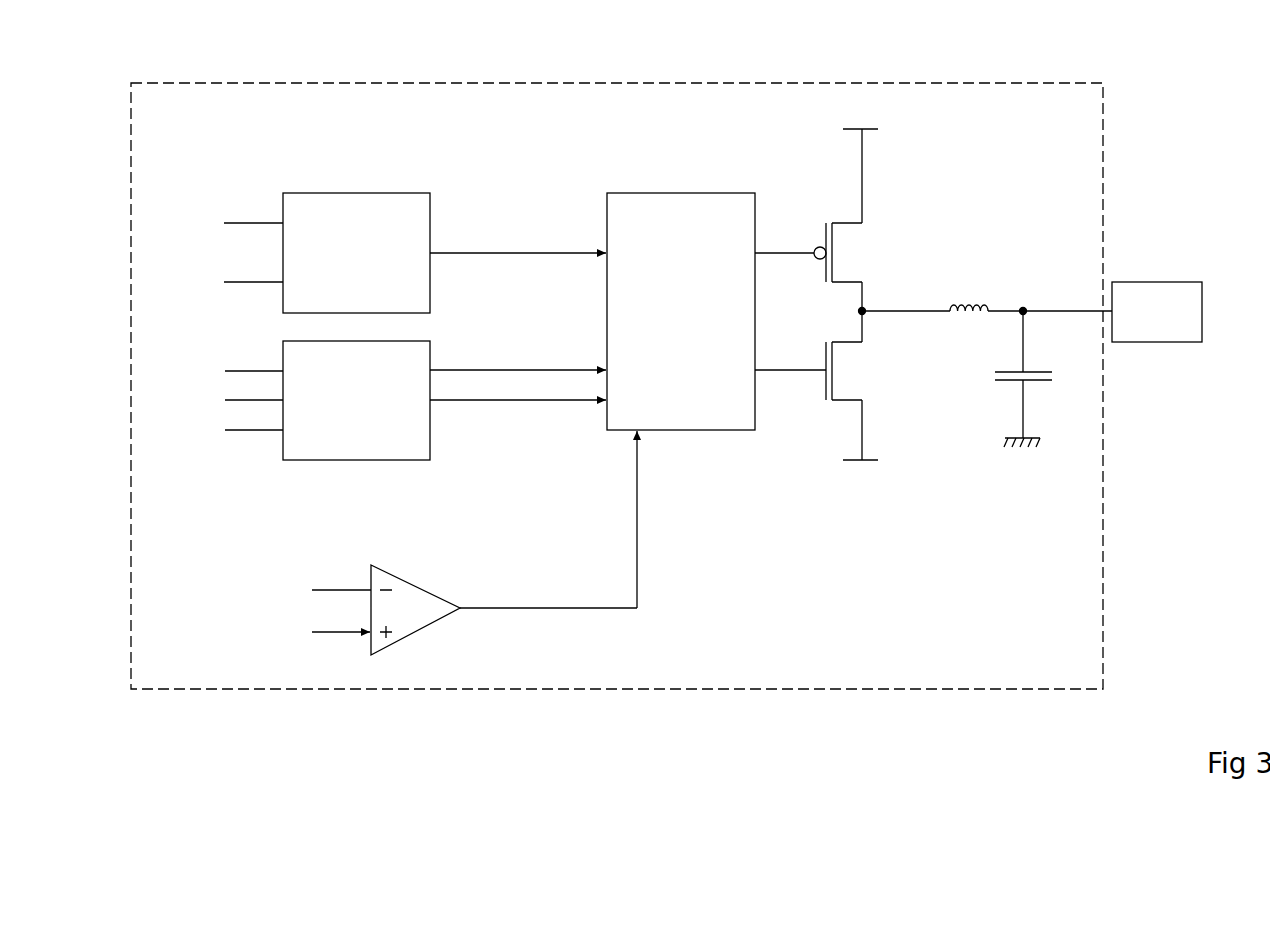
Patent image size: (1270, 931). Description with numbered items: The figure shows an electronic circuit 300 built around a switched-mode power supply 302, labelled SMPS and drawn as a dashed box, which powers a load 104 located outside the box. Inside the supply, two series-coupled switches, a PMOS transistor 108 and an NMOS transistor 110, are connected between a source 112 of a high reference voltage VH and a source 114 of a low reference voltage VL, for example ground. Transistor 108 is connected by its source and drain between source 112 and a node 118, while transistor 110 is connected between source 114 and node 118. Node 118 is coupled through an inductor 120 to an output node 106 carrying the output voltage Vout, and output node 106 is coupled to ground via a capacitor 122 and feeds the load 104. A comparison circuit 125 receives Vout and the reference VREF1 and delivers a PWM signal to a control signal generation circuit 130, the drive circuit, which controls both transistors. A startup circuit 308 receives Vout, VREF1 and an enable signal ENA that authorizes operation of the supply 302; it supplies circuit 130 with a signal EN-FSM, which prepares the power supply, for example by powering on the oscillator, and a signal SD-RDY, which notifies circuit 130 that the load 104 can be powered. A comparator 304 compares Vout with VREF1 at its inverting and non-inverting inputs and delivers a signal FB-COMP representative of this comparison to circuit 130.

The electronic circuit 300 is at (1174, 141).
The switched-mode power supply 302 is at (733, 83).
The comparison circuit 125 is at (362, 200).
The startup circuit 308 is at (320, 461).
The control signal generation circuit 130 is at (660, 200).
The comparator 304 is at (415, 625).
The source of high reference voltage 112 is at (845, 125).
The transistor 108 is at (845, 217).
The transistor 110 is at (845, 408).
The source of low reference voltage 114 is at (848, 462).
The node 118 is at (866, 307).
The inductor 120 is at (972, 302).
The output node 106 is at (1020, 325).
The capacitor 122 is at (1040, 385).
The load 104 is at (1148, 290).